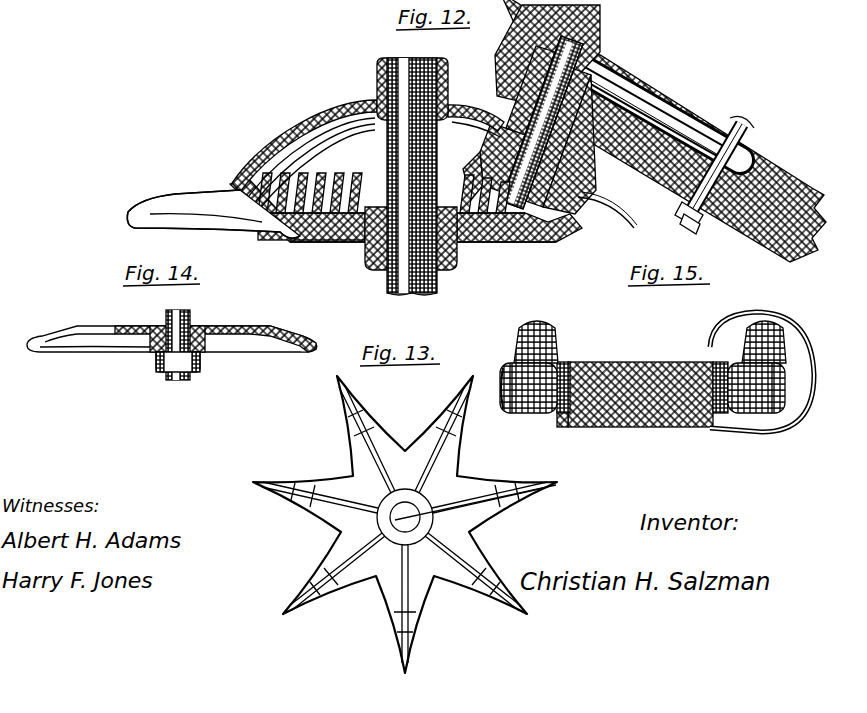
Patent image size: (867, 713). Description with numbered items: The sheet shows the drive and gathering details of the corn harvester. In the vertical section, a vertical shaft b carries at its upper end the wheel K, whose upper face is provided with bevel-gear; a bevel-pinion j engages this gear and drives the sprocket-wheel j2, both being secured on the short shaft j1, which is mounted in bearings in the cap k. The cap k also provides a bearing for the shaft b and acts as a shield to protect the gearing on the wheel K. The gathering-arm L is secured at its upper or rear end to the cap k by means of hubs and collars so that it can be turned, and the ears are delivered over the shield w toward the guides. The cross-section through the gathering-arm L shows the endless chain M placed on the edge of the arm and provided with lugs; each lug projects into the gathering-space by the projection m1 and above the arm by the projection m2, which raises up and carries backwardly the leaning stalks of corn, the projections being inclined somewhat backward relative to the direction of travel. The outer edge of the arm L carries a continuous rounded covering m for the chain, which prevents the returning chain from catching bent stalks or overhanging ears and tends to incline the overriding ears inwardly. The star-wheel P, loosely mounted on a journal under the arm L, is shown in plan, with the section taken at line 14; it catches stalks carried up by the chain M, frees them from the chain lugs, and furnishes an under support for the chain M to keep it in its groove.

In FIG. 12, the gathering-arm L is at (663, 131).
In FIG. 15, the gathering-arm L is at (640, 424).
In FIG. 12, the short shaft j1 is at (640, 56).
In FIG. 12, the sprocket-wheel j2 is at (672, 112).
In FIG. 12, the shield w is at (613, 62).
In FIG. 12, the bevel-pinion j is at (626, 162).
In FIG. 12, the cap k is at (336, 130).
In FIG. 12, the vertical shaft b is at (392, 286).
In FIG. 12, the wheel K is at (546, 236).
In FIG. 14, the star-wheel P is at (243, 332).
In FIG. 13, the star-wheel P is at (478, 544).
In FIG. 13, the section line 14 is at (548, 488).
In FIG. 15, the endless chain M is at (562, 414).
In FIG. 15, the projection m1 is at (512, 362).
In FIG. 15, the projection m2 is at (556, 330).
In FIG. 15, the covering m is at (772, 316).